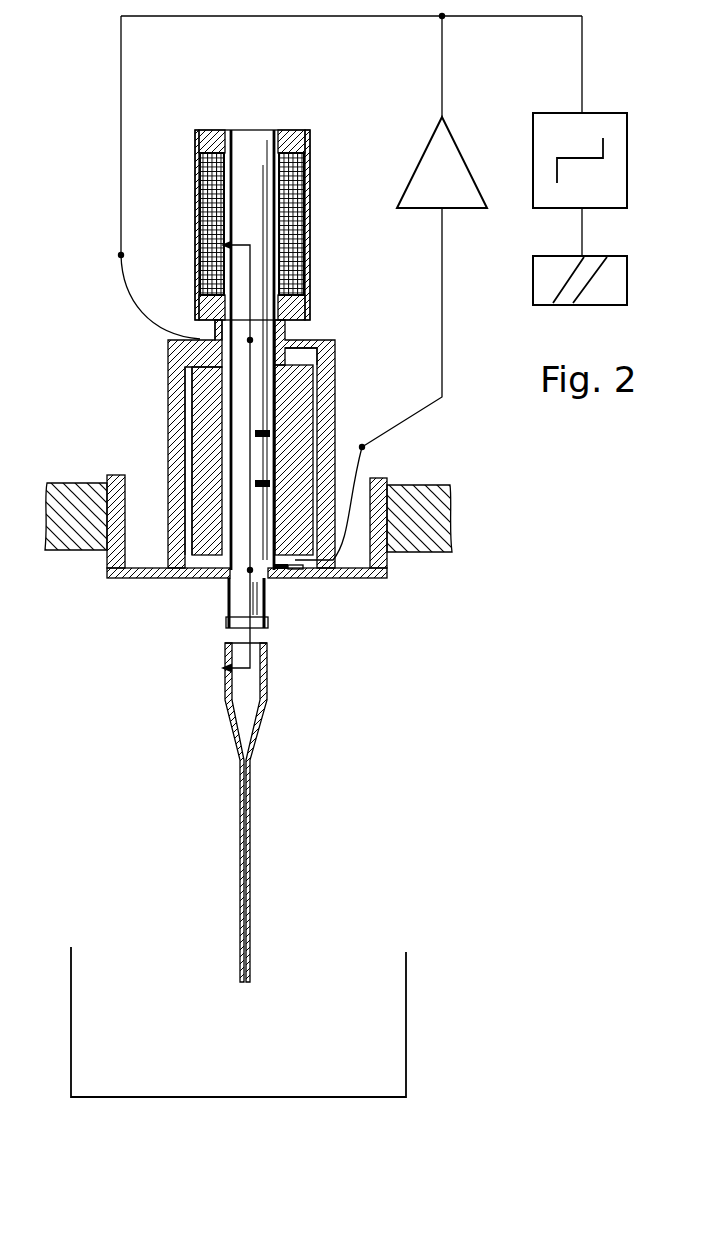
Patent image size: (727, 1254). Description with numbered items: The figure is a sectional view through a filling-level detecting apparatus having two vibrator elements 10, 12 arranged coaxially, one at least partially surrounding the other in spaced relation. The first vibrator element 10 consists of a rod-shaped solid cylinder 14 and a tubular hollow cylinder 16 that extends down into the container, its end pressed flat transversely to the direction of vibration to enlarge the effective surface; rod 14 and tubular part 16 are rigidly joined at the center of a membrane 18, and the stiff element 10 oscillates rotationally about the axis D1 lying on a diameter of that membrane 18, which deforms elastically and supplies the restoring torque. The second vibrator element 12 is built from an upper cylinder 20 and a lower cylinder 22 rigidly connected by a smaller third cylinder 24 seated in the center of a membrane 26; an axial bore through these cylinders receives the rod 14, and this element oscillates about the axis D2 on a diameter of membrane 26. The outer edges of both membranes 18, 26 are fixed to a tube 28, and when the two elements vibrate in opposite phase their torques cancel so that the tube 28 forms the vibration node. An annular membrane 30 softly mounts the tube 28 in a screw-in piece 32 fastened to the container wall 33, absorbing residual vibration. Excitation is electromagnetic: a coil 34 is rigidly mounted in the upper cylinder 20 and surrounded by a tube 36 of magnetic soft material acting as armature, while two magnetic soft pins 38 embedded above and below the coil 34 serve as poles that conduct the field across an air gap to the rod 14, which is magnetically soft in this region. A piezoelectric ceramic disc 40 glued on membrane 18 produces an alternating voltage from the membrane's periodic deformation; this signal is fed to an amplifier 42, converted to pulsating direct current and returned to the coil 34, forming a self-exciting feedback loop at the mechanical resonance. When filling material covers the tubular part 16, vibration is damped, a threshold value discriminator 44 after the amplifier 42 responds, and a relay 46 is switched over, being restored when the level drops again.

The vibrator element 10 is at (242, 444).
The vibrator element 12 is at (293, 412).
The solid cylinder 14 is at (247, 147).
The hollow cylinder 16 is at (248, 790).
The membrane 18 is at (203, 578).
The cylinder 20 is at (249, 203).
The cylinder 22 is at (205, 421).
The third cylinder 24 is at (283, 357).
The membrane 26 is at (200, 336).
The tube 28 is at (178, 392).
The annular membrane 30 is at (358, 578).
The screw-in piece 32 is at (120, 495).
The container wall 33 is at (428, 530).
The coil 34 is at (198, 202).
The tube 36 is at (197, 255).
The pins 38 is at (297, 160).
The piezoelectric ceramic disc 40 is at (288, 572).
The amplifier 42 is at (450, 187).
The threshold value discriminator 44 is at (610, 158).
The relay 46 is at (607, 279).
The axis D1 is at (233, 586).
The axis D2 is at (192, 362).